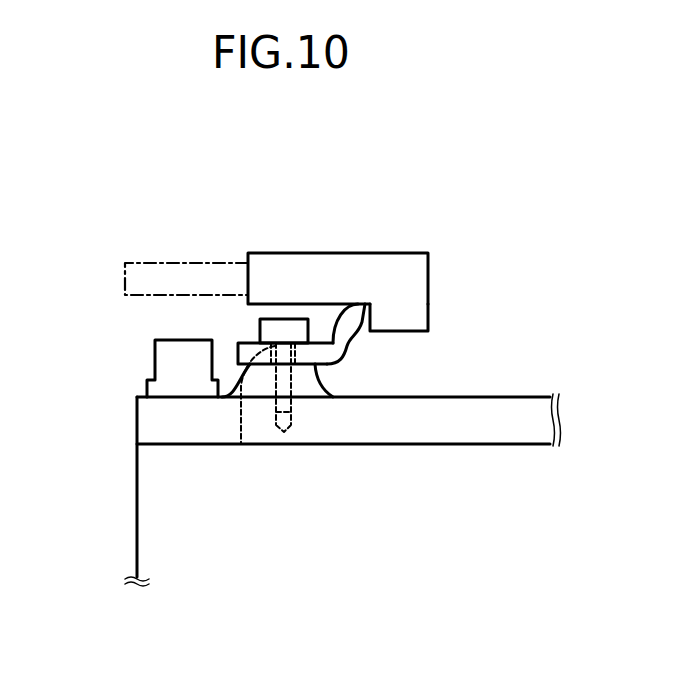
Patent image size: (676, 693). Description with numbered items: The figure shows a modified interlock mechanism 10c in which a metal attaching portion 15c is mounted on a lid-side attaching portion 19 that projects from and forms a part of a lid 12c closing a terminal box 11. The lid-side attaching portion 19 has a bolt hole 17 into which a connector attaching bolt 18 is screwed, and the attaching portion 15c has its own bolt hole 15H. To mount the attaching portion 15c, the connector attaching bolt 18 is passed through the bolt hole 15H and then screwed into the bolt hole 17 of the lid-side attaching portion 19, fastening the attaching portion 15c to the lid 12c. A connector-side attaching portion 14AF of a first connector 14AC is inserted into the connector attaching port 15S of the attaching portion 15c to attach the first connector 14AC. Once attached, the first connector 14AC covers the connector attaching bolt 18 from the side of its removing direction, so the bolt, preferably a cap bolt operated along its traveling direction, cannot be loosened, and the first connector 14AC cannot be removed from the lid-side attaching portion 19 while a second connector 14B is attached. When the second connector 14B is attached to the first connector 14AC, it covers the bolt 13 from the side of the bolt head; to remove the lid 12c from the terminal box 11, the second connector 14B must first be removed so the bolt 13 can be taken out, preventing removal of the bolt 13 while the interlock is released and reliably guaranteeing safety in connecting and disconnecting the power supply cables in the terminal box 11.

The interlock mechanism 10c is at (486, 209).
The second connector 14B is at (175, 267).
The first connector 14AC is at (331, 268).
The connector-side attaching portion 14AF is at (390, 310).
The connector attaching bolt 18 is at (277, 328).
The attaching portion 15c is at (348, 340).
The connector attaching port 15S is at (362, 307).
The bolt hole 15H is at (241, 443).
The bolt hole 17 is at (285, 432).
The bolt 13 is at (163, 359).
The lid-side attaching portion 19 is at (312, 388).
The lid 12c is at (477, 403).
The terminal box 11 is at (158, 515).